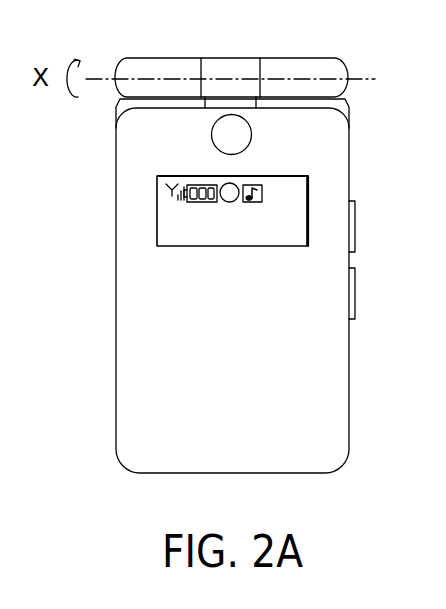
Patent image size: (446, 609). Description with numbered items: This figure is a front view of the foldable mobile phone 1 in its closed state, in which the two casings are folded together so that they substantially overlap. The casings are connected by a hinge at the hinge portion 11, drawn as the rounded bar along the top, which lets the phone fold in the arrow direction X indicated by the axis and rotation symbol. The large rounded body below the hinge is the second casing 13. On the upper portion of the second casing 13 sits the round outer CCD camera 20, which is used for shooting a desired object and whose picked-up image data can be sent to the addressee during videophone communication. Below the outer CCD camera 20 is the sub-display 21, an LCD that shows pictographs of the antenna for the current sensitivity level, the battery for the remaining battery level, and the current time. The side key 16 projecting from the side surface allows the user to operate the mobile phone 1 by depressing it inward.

The mobile phone 1 is at (374, 383).
The hinge portion 11 is at (346, 63).
The second casing 13 is at (116, 269).
The side key 16 is at (356, 227).
The outer CCD camera 20 is at (230, 114).
The sub-display 21 is at (157, 210).